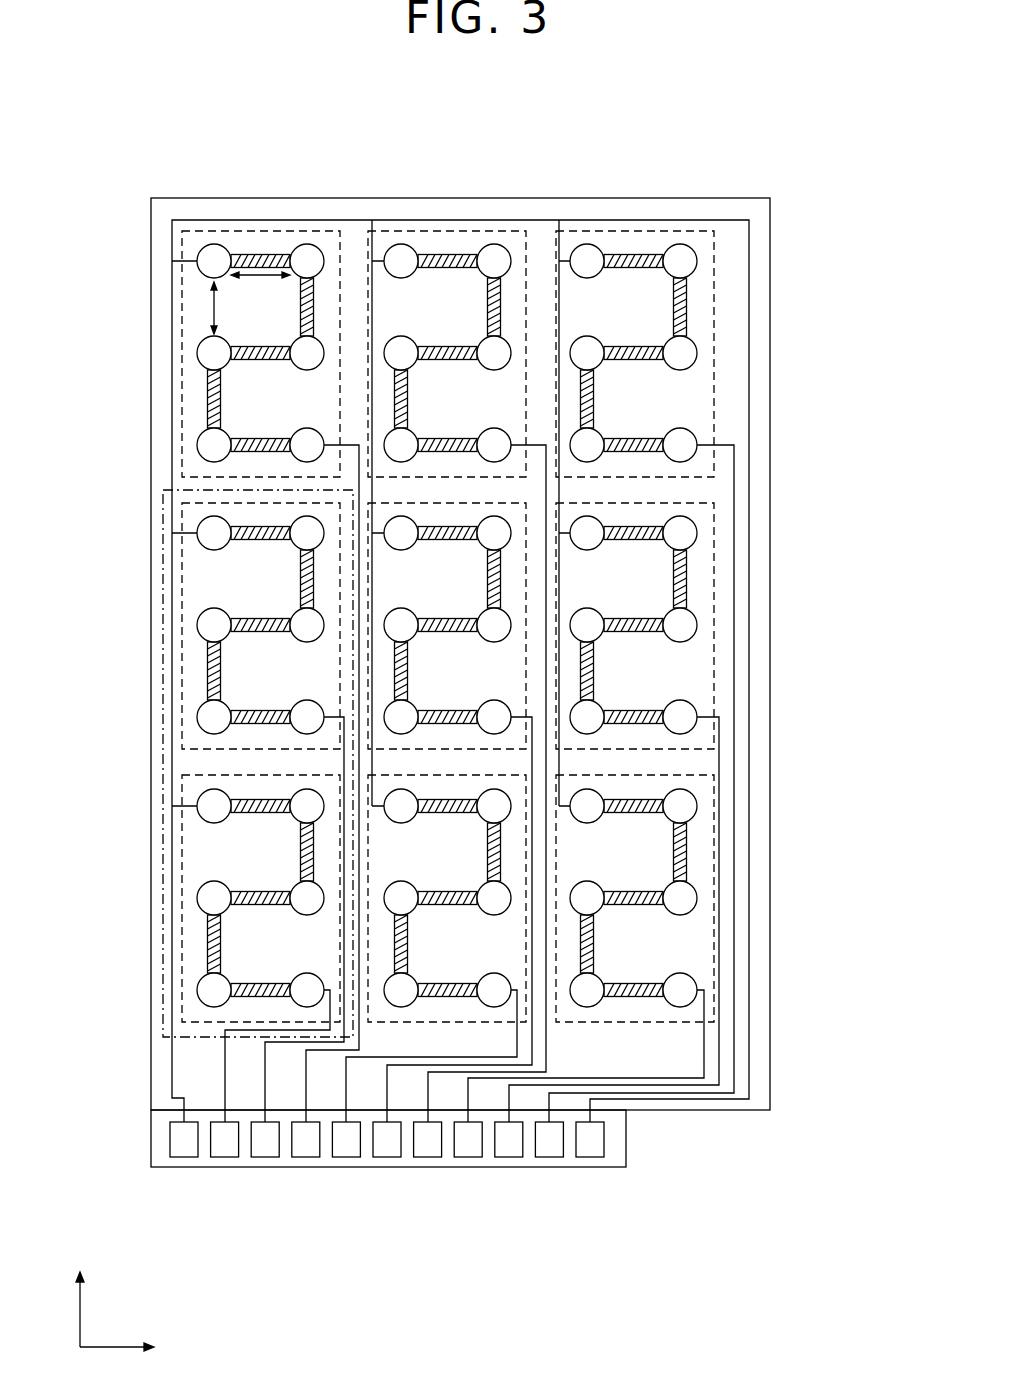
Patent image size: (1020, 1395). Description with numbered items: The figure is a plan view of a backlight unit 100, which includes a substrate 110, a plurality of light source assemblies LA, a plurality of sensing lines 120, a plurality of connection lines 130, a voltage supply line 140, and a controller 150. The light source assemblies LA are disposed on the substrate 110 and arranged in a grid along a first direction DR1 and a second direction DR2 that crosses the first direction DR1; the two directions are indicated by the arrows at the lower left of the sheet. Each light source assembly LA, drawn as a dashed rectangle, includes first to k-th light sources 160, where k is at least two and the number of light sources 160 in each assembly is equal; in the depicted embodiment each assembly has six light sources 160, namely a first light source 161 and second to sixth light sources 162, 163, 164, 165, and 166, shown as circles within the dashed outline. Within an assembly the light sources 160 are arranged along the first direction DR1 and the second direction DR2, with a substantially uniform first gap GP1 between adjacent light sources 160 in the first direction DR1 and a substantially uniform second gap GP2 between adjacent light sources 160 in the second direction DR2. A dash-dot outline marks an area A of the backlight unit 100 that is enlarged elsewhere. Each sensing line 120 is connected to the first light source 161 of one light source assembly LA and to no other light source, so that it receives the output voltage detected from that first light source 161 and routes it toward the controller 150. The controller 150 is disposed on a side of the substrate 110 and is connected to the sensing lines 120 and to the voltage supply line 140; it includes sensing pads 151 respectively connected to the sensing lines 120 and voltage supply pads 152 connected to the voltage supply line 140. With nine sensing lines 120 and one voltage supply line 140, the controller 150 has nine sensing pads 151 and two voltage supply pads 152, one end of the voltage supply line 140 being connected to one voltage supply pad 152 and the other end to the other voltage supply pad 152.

The backlight unit 100 is at (750, 158).
The substrate 110 is at (770, 998).
The sensing lines 120 is at (222, 1046).
The connection lines 130 is at (172, 790).
The voltage supply line 140 is at (172, 1083).
The controller 150 is at (346, 1167).
The sensing pads 151 is at (226, 1160).
The voltage supply pad 152 is at (184, 1160).
The light sources 160 is at (165, 898).
The first light source 161 is at (296, 980).
The second light source 162 is at (197, 992).
The third light source 163 is at (197, 900).
The fourth light source 164 is at (298, 886).
The fifth light source 165 is at (296, 820).
The sixth light source 166 is at (201, 820).
The light source assemblies LA is at (182, 394).
The area A is at (163, 587).
The first gap GP1 is at (260, 288).
The second gap GP2 is at (234, 308).
The first direction DR1 is at (139, 1347).
The second direction DR2 is at (81, 1296).